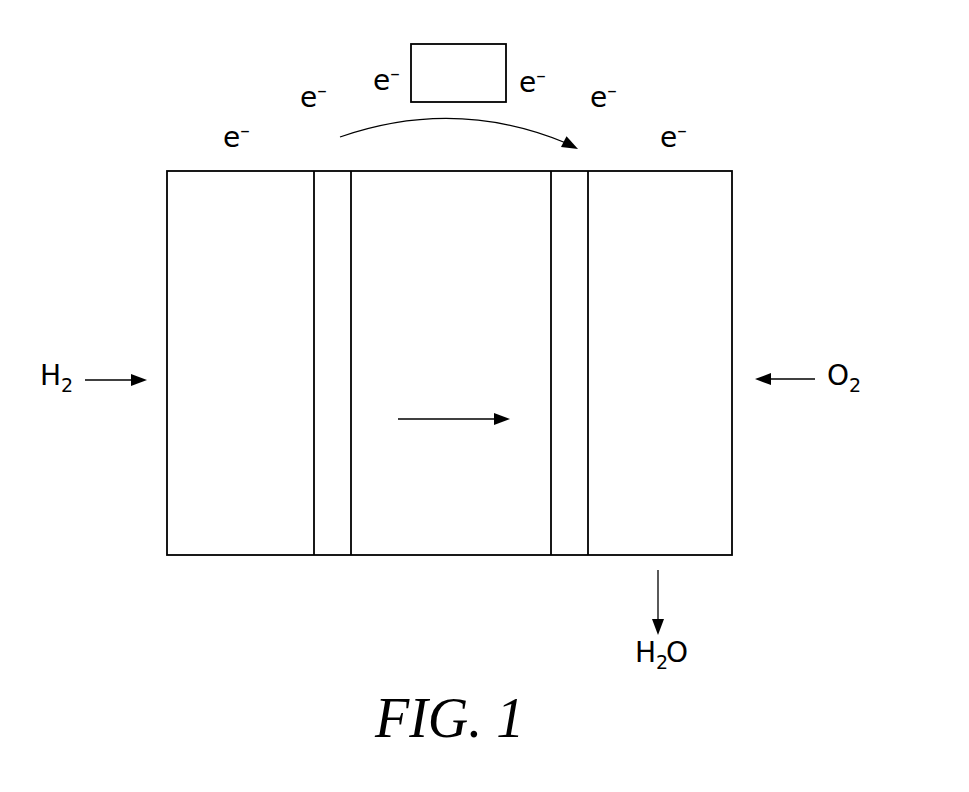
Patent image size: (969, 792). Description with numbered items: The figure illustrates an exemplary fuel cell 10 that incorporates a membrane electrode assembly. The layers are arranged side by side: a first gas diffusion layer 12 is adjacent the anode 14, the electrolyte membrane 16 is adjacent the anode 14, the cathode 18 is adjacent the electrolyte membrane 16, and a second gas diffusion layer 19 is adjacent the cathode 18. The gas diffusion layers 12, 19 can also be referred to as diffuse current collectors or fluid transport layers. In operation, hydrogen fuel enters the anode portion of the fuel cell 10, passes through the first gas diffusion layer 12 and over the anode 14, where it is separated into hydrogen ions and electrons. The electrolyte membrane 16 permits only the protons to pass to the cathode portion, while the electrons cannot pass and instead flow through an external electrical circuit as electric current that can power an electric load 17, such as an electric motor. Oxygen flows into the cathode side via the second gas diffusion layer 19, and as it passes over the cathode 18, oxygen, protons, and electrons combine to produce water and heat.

The fuel cell 10 is at (762, 80).
The first gas diffusion layer 12 is at (244, 537).
The anode 14 is at (328, 557).
The electrolyte membrane 16 is at (468, 537).
The electric load 17 is at (477, 44).
The cathode 18 is at (568, 557).
The second gas diffusion layer 19 is at (671, 537).